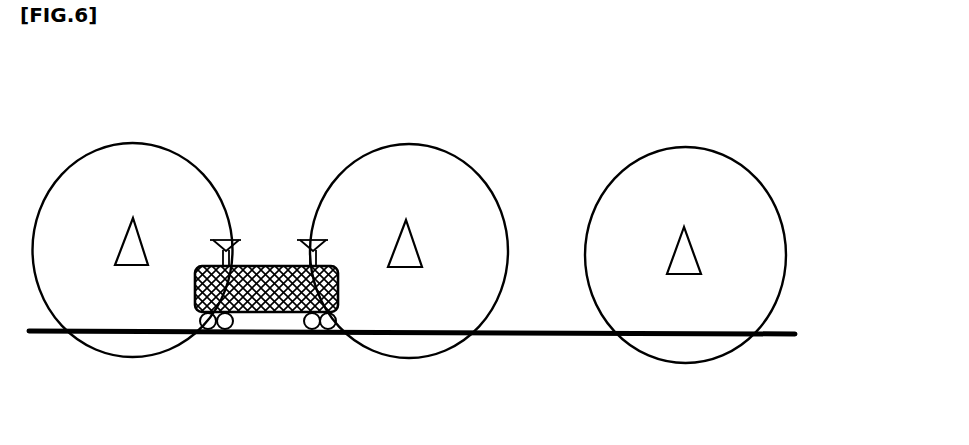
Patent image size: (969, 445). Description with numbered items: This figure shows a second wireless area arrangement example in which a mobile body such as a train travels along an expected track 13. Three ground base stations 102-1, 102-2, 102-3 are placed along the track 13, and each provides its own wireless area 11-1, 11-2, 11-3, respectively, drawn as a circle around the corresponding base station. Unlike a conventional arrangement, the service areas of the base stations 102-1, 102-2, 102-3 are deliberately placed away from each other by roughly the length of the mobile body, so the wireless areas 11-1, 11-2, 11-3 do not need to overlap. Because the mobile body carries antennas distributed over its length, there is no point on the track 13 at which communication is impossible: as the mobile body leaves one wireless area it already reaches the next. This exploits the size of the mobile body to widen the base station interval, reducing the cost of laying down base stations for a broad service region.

The ground base station 102-1 is at (133, 218).
The ground base station 102-2 is at (406, 220).
The ground base station 102-3 is at (684, 227).
The wireless area 11-1 is at (222, 190).
The wireless area 11-2 is at (497, 190).
The wireless area 11-3 is at (775, 203).
The track 13 is at (517, 337).